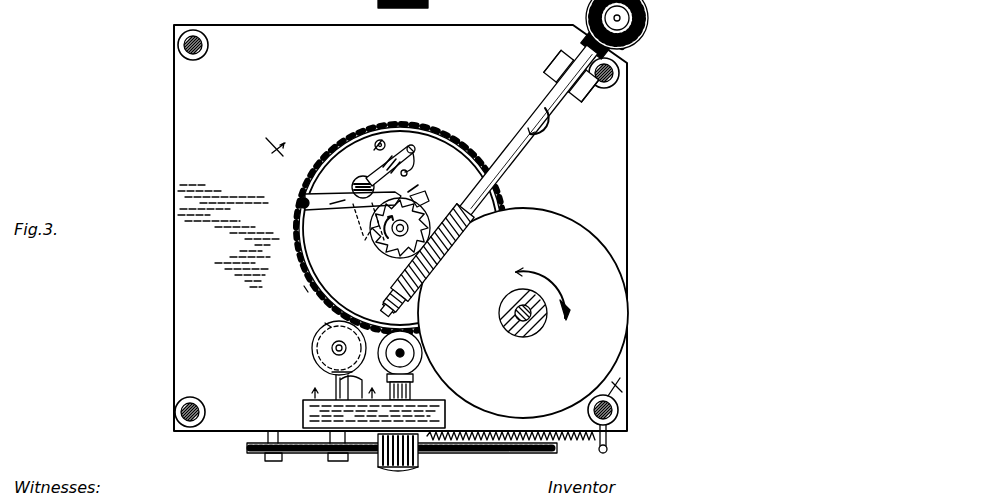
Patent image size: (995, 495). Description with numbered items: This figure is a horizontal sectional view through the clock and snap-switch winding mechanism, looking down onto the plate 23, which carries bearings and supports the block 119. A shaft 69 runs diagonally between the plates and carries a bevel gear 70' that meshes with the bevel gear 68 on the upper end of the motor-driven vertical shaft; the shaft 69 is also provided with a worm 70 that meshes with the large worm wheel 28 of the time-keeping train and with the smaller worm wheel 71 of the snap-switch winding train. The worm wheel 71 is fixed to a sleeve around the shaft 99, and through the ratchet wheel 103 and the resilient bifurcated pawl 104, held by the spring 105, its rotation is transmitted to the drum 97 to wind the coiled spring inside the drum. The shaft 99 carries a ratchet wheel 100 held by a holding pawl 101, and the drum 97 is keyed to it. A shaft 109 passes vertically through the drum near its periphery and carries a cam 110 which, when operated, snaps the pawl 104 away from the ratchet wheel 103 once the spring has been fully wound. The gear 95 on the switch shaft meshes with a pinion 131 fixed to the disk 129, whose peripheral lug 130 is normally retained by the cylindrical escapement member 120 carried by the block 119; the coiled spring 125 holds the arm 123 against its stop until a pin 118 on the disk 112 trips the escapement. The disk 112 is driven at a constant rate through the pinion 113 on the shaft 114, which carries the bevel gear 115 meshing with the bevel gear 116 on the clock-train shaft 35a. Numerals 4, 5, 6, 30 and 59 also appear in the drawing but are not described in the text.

The plate 23 is at (399, 239).
The section line indicator 4 is at (438, 259).
The drum 97 is at (316, 274).
The gear 95 is at (305, 288).
The holding pawl 101 is at (336, 213).
The pawl 104 is at (362, 178).
The shaft 109 is at (386, 146).
The cam 110 is at (376, 149).
The spring 105 is at (416, 160).
The ratchet wheel 103 is at (412, 198).
The worm wheel 71 is at (424, 209).
The shaft 99 is at (400, 228).
The ratchet wheel 100 is at (379, 251).
The disk 129 is at (328, 338).
The pinion 131 is at (327, 323).
The cylindrical escapement member 120 is at (336, 376).
The peripheral lug 130 is at (330, 378).
The section line indicator 6 is at (307, 385).
The section line indicator 5 is at (371, 383).
The worm wheel 28 is at (608, 310).
The disc hub 30 is at (531, 326).
The bevel gear 116 is at (414, 353).
The shaft 35a is at (408, 346).
The bevel gear 115 is at (414, 374).
The shaft 114 is at (412, 392).
The block 119 is at (312, 413).
The disk 112 is at (468, 455).
The pins 118 is at (280, 455).
The arm 123 is at (351, 453).
The pinion 113 is at (390, 467).
The coiled spring 125 is at (534, 448).
The shaft 69 is at (511, 152).
The worm 70 is at (413, 262).
The bevel gear 70' is at (637, 47).
The bevel gear 68 is at (641, 27).
The shaft 59 is at (438, 8).